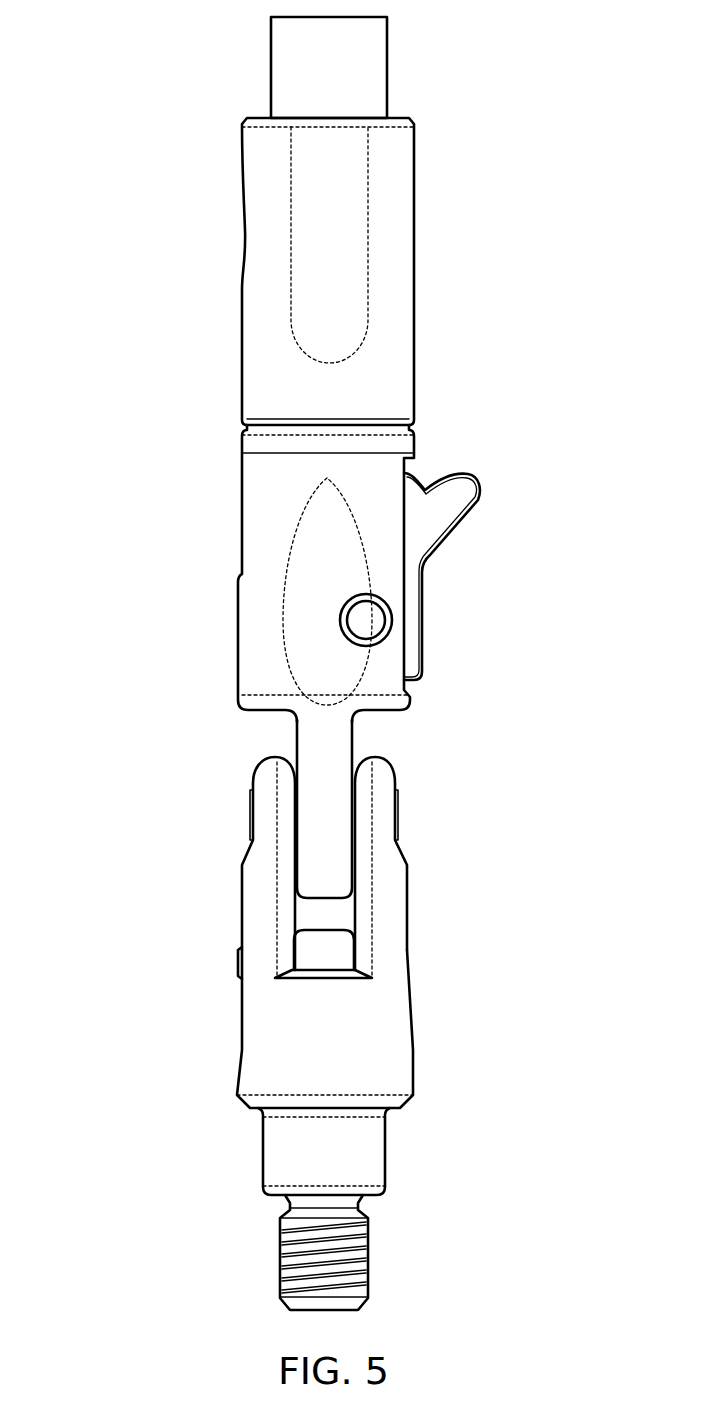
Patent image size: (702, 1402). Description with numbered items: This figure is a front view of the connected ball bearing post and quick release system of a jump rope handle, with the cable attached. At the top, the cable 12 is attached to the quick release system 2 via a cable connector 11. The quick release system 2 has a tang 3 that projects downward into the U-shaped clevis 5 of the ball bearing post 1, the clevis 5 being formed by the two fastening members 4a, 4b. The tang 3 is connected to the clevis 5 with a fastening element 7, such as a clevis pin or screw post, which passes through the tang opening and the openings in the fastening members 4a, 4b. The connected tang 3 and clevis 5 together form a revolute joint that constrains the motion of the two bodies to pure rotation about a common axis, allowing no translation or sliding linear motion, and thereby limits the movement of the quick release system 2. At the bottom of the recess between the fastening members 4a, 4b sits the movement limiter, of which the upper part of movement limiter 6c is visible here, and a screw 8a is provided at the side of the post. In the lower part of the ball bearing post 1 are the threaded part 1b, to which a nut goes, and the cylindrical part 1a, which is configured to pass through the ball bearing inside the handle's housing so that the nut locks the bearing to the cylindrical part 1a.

The cable 12 is at (352, 70).
The cable connector 11 is at (347, 303).
The quick release system 2 is at (345, 565).
The tang 3 is at (328, 743).
The fastening element 7 is at (400, 812).
The fastening member 4a is at (260, 876).
The fastening member 4b is at (385, 878).
The screw 8a is at (238, 968).
The upper part of movement limiter 6c is at (330, 950).
The clevis 5 is at (323, 1010).
The ball bearing post 1 is at (360, 1040).
The threaded part of the ball bearing post 1b is at (357, 1148).
The cylindrical part passing through the ball bearing 1a is at (345, 1262).